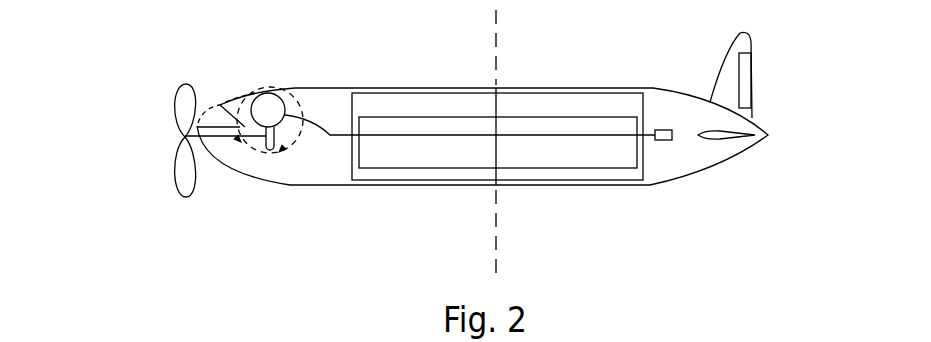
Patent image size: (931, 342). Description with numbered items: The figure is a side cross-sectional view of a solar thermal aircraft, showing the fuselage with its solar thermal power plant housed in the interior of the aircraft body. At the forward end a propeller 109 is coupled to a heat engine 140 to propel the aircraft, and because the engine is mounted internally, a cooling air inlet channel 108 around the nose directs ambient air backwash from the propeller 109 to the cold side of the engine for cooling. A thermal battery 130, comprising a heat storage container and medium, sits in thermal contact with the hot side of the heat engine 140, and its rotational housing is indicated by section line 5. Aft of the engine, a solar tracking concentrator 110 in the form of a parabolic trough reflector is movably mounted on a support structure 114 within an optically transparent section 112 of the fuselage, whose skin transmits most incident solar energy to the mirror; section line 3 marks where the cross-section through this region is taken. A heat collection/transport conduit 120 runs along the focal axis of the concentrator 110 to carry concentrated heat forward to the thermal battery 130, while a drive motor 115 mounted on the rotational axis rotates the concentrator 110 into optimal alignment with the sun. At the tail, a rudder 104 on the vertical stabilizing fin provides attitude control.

The section line 3— 3 is at (496, 10).
The section line 5— 5 is at (268, 128).
The rudder 104 is at (752, 80).
The cooling air inlet channel 108 is at (213, 110).
The propeller 109 is at (176, 100).
The solar tracking concentrator 110 is at (410, 168).
The optically transparent section 112 is at (588, 187).
The support structure 114 is at (496, 147).
The drive motor 115 is at (663, 141).
The heat collection/transport conduit 120 is at (400, 128).
The thermal battery 130 is at (272, 104).
The heat engine 140 is at (284, 143).